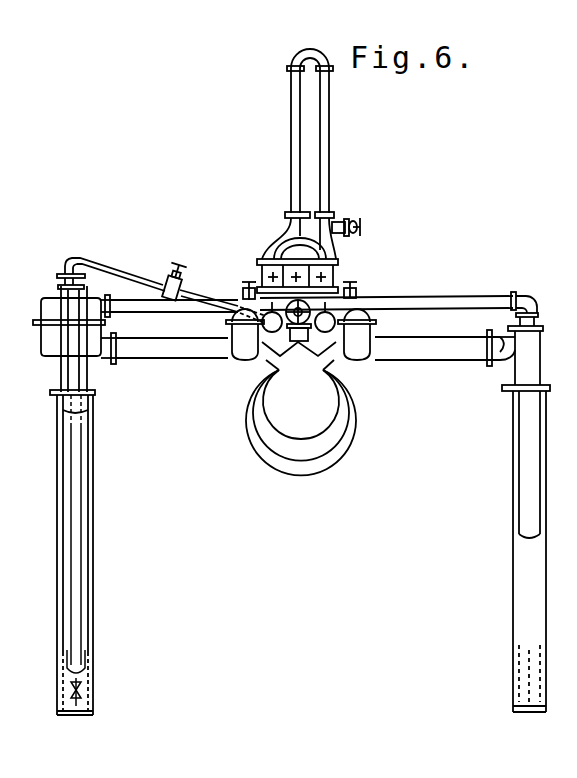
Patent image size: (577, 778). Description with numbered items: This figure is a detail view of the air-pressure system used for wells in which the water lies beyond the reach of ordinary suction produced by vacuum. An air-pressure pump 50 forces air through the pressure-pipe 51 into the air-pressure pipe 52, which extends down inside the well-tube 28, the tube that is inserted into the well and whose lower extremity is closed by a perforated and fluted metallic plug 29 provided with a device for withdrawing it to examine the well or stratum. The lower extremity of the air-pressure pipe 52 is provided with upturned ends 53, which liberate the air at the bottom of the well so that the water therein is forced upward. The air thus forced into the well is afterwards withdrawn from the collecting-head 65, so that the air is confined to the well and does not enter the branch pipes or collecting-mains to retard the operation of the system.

The well-tube 28 is at (87, 555).
The perforated and fluted metallic plug 29 is at (74, 737).
The air-pressure pump 50 is at (301, 414).
The pressure-pipe 51 is at (165, 284).
The air-pressure pipe 52 is at (76, 512).
The upturned ends 53 is at (87, 674).
The collecting-head 65 is at (41, 341).